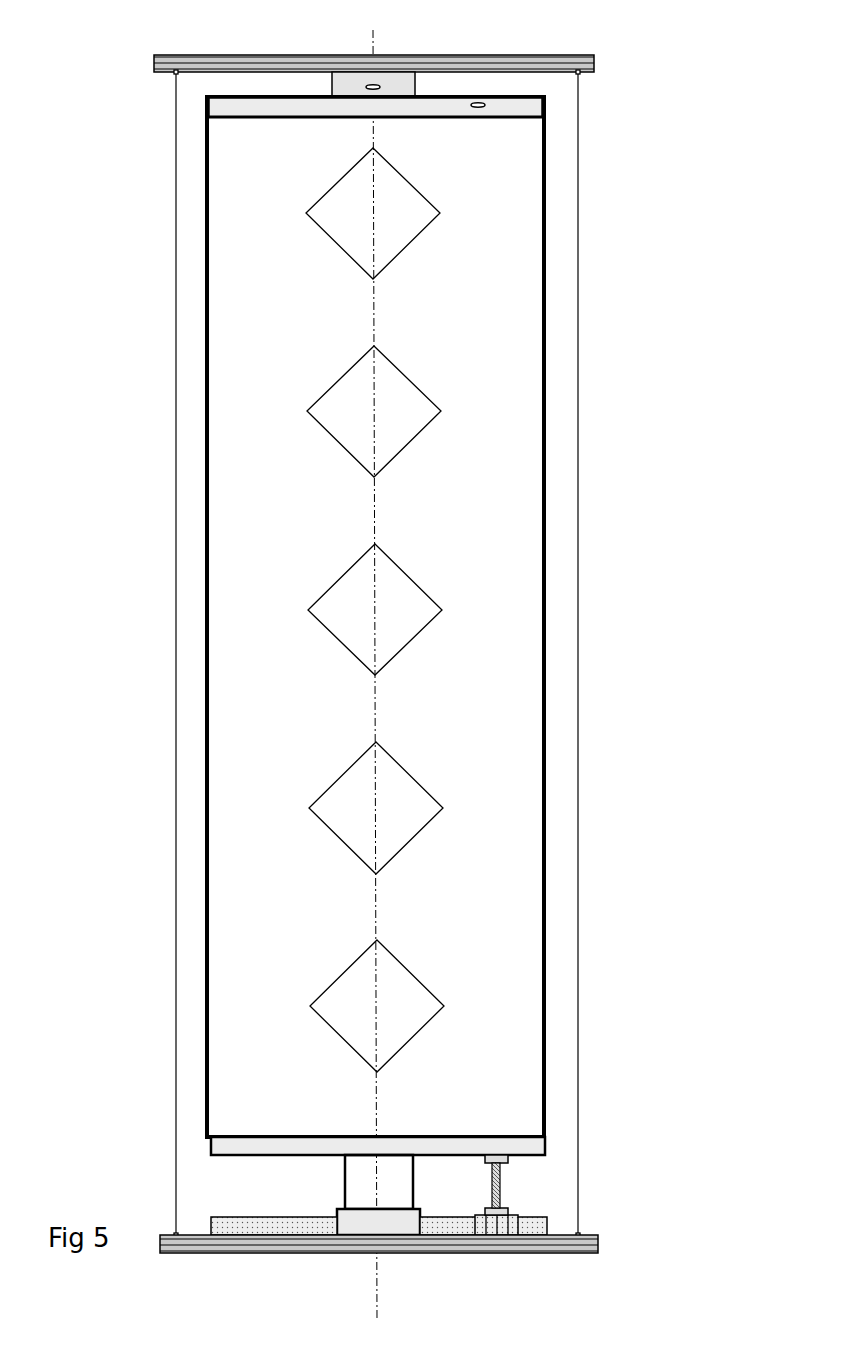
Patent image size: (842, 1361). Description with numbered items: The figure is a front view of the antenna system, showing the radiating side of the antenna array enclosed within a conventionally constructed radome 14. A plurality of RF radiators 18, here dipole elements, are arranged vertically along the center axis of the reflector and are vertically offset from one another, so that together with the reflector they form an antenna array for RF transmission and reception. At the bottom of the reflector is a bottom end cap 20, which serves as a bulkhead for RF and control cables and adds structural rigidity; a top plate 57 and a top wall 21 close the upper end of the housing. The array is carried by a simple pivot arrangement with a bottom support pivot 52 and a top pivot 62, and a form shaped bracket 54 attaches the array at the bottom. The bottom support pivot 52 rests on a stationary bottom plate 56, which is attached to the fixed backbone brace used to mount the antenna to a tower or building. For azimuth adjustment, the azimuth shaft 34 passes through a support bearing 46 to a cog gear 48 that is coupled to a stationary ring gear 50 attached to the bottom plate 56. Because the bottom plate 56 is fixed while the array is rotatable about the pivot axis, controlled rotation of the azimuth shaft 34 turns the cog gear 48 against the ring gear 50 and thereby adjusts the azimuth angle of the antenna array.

The radome 14 is at (175, 493).
The RF radiators 18 is at (326, 233).
The bottom end cap 20 is at (297, 1147).
The top wall of housing 21 is at (479, 103).
The azimuth shaft 34 is at (500, 1180).
The support bearing 46 is at (483, 1160).
The cog gear 48 is at (518, 1213).
The ring gear 50 is at (227, 1215).
The bottom support pivot 52 is at (375, 1222).
The form shaped bracket 54 is at (377, 1198).
The bottom plate 56 is at (290, 1244).
The top plate 57 is at (592, 55).
The top pivot 62 is at (374, 86).